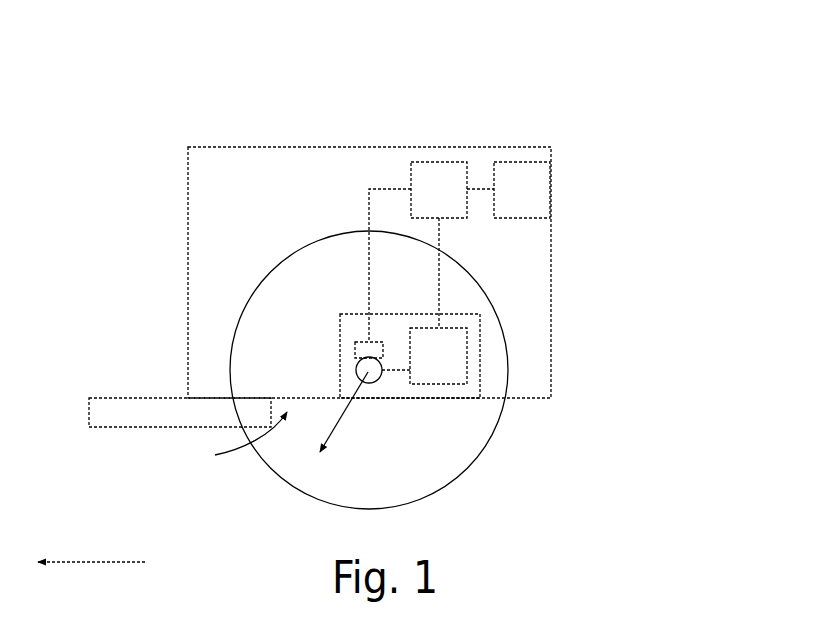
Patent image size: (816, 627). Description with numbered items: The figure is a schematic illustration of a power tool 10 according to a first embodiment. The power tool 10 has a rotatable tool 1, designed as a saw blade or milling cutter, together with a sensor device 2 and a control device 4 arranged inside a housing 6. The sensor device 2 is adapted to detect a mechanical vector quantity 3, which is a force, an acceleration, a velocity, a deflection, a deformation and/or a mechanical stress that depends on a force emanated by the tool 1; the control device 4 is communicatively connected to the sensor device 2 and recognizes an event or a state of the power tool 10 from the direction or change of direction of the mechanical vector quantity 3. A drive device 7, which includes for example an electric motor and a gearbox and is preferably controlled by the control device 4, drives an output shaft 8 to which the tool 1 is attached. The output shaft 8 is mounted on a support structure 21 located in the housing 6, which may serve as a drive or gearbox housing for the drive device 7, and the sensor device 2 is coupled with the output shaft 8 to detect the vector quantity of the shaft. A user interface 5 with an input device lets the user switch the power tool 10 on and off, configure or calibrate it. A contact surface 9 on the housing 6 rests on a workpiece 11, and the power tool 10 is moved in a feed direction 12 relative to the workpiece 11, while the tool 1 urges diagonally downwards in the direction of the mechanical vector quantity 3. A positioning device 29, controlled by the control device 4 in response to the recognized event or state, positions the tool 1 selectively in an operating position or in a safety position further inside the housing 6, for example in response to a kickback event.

The rotatable tool 1 is at (275, 452).
The sensor device 2 is at (362, 352).
The mechanical vector quantity 3 is at (341, 420).
The control device 4 is at (449, 172).
The user interface 5 is at (545, 200).
The housing 6 is at (543, 332).
The drive device 7 is at (506, 397).
The positioning device 29 is at (453, 376).
The output shaft 8 is at (362, 371).
The contact surface 9 is at (242, 444).
The power tool 10 is at (590, 100).
The workpiece 11 is at (132, 410).
The feed direction 12 is at (90, 562).
The support structure 21 is at (480, 366).